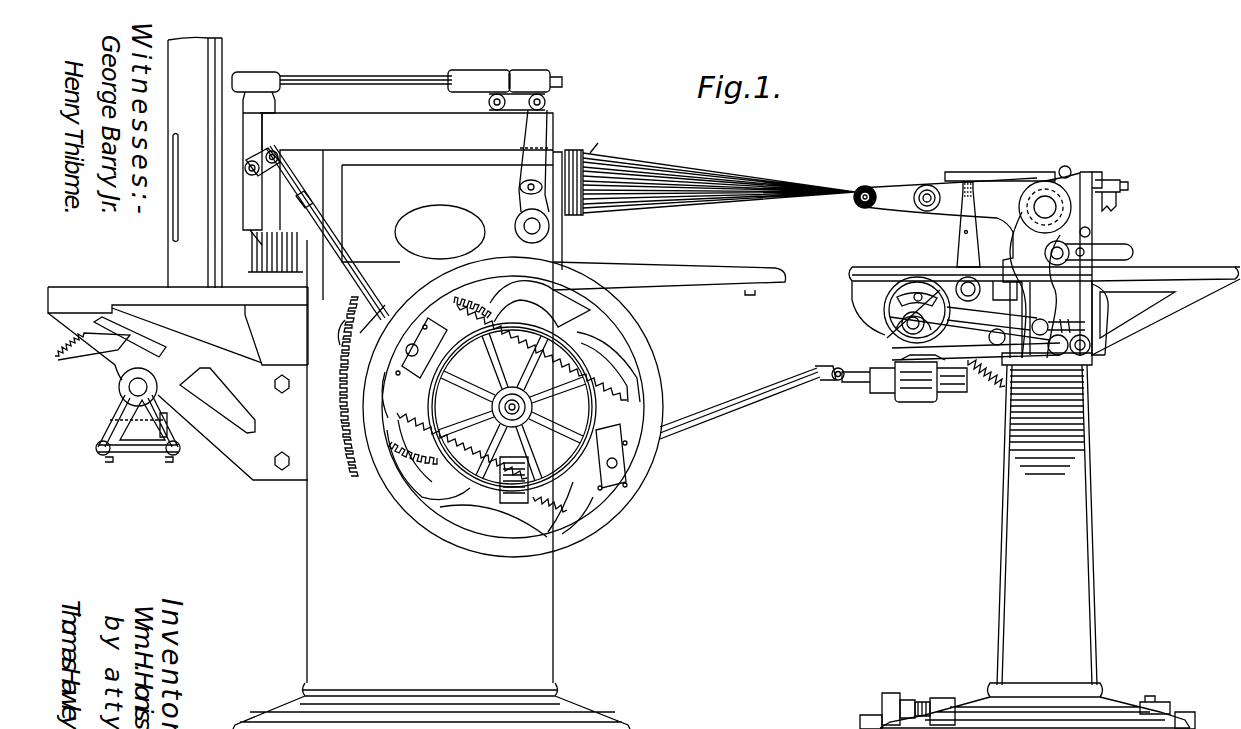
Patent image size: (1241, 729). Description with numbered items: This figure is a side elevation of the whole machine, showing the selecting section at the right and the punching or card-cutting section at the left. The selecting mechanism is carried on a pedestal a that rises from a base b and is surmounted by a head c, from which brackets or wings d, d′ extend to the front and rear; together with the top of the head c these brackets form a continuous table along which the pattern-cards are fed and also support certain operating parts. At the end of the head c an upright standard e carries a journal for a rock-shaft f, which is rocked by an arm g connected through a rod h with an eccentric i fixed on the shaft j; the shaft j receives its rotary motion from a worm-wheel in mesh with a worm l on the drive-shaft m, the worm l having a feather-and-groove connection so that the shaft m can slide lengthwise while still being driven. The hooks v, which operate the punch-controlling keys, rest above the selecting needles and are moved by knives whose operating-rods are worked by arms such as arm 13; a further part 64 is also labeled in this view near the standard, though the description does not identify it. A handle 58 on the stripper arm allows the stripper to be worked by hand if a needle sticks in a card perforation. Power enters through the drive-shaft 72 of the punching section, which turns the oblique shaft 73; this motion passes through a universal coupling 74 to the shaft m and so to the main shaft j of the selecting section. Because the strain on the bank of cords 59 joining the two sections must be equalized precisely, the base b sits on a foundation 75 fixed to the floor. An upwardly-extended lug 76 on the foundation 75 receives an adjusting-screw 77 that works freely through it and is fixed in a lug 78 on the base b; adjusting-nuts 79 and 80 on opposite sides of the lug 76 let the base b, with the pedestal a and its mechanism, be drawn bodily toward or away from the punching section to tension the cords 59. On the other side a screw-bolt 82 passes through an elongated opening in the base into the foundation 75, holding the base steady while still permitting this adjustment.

The cords 59 is at (727, 182).
The lever arm 64 is at (886, 200).
The arm 13 is at (1000, 219).
The rock-shaft f is at (1045, 205).
The hooks v is at (1115, 191).
The standard e is at (1092, 232).
The handle 58 is at (1134, 253).
The bracket or wing d is at (1044, 294).
The bracket or wing d′ is at (1166, 299).
The arm g is at (1035, 285).
The rod h is at (1016, 320).
The head c is at (1069, 318).
The eccentric i is at (896, 318).
The shaft j is at (905, 322).
The worm l is at (917, 372).
The drive-shaft m is at (968, 380).
The universal coupling 74 is at (838, 382).
The oblique shaft 73 is at (708, 420).
The drive-shaft 72 is at (507, 420).
The pedestal a is at (1047, 519).
The base b is at (1100, 710).
The lug 76 is at (890, 693).
The adjusting-nut 80 is at (907, 700).
The adjusting-screw 77 is at (925, 702).
The lug 78 is at (950, 698).
The adjusting-nut 79 is at (865, 700).
The screw-bolt 82 is at (1152, 700).
The foundation 75 is at (1190, 714).